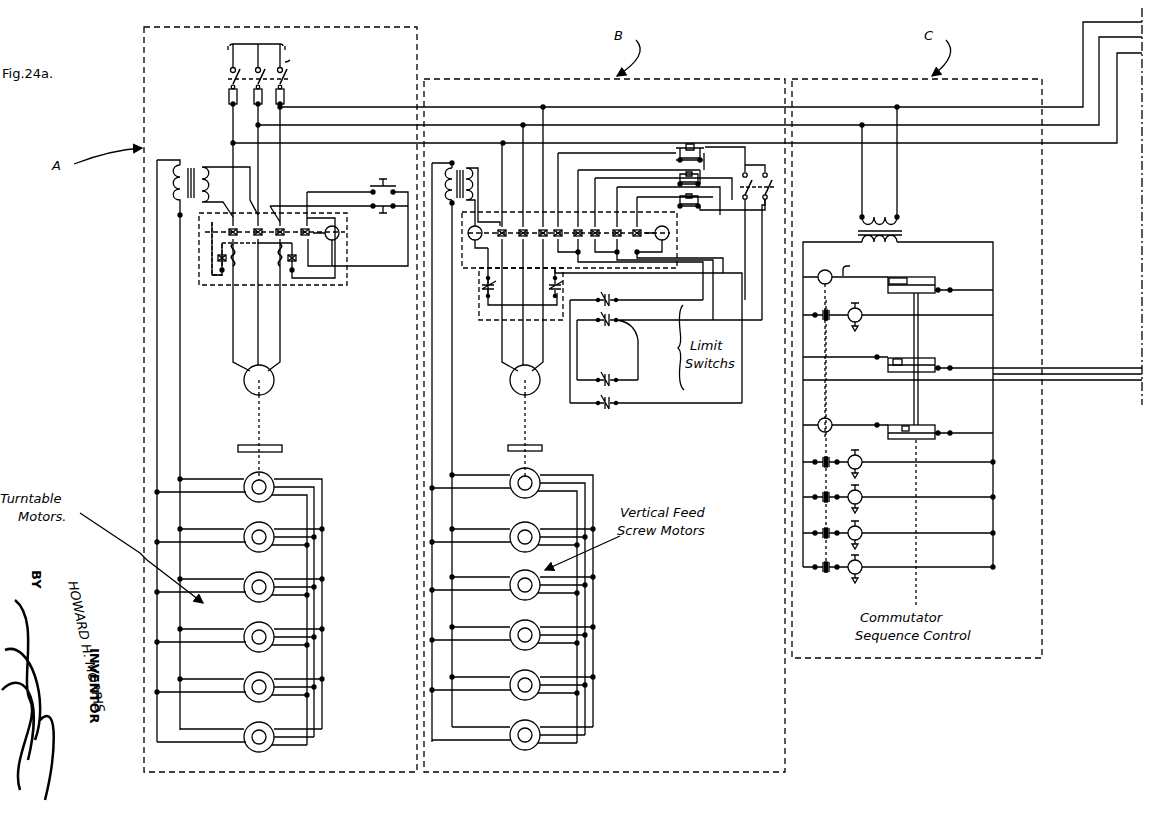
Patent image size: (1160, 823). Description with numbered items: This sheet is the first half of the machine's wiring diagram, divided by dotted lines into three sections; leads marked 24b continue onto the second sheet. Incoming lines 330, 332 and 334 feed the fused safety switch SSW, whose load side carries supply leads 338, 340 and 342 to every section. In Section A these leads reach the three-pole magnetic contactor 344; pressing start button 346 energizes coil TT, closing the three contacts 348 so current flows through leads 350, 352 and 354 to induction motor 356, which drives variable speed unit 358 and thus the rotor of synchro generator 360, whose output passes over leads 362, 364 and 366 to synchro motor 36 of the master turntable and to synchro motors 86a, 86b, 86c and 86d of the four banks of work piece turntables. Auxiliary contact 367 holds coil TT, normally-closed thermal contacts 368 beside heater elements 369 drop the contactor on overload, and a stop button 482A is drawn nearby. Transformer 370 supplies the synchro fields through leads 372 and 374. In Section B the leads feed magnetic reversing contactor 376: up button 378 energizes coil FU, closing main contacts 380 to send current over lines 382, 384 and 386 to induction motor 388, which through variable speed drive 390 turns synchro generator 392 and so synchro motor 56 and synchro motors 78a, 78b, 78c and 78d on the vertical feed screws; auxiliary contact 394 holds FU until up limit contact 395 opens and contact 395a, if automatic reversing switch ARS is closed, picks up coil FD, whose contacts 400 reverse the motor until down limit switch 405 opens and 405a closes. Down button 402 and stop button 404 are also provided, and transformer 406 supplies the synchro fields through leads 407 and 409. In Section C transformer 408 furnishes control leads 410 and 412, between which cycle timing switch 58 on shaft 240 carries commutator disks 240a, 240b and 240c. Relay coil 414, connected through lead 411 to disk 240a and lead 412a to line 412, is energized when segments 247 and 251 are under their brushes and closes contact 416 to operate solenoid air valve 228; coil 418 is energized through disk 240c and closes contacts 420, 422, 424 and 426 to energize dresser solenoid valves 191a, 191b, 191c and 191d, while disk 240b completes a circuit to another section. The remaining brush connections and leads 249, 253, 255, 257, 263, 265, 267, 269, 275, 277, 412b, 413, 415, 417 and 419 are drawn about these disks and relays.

The incoming line 330 is at (230, 66).
The incoming line 332 is at (283, 46).
The incoming line 334 is at (285, 64).
The fused safety switch SSW is at (288, 81).
The supply lead 338 is at (425, 108).
The supply lead 340 is at (377, 124).
The supply lead 342 is at (361, 106).
The second sheet of wiring diagram 24b is at (1152, 15).
The transformer 370 is at (208, 150).
The lead 372 is at (157, 390).
The lead 374 is at (180, 416).
The three-pole magnetic contactor 344 is at (348, 282).
The contactor coil TT is at (327, 245).
The normally-closed thermally-operated contacts 368 is at (212, 258).
The heater elements 369 is at (221, 268).
The main contacts 348 is at (262, 250).
The start button 346 is at (372, 186).
The auxiliary contact 367 is at (305, 202).
The stop push button 482A is at (384, 230).
The motor lead 350 is at (233, 328).
The motor lead 352 is at (257, 341).
The motor lead 354 is at (281, 350).
The induction motor 356 is at (275, 384).
The variable speed unit 358 is at (279, 444).
The synchro generator 360 is at (251, 476).
The lead 362 is at (309, 478).
The lead 364 is at (323, 503).
The lead 366 is at (308, 556).
The synchro motor 36 is at (251, 527).
The synchro motor 86a is at (251, 577).
The synchro motor 86b is at (251, 627).
The synchro motor 86c is at (251, 677).
The synchro motor 86d is at (251, 727).
The transformer 406 is at (475, 153).
The lead 407 is at (452, 423).
The lead 409 is at (432, 447).
The up feed coil FU is at (478, 236).
The down feed coil FD is at (655, 238).
The main contacts 380 is at (500, 224).
The main contacts 400 is at (596, 224).
The up button 378 is at (688, 150).
The down push button 402 is at (700, 170).
The stop push button 404 is at (695, 210).
The automatic reversing switch ARS is at (770, 183).
The magnetic reversing contactor 376 is at (480, 283).
The auxiliary contact 394 is at (561, 287).
The motor line 382 is at (500, 352).
The motor line 384 is at (517, 365).
The motor line 386 is at (540, 372).
The induction motor 388 is at (517, 386).
The variable speed drive 390 is at (543, 448).
The up limit switch contact 395 is at (620, 296).
The up limit switch contact 395a is at (618, 317).
The down limit switch 405 is at (620, 370).
The down limit switch contact 405a is at (622, 413).
The synchro generator 392 is at (518, 474).
The synchro motor 56 is at (517, 528).
The synchro motor 78a is at (519, 576).
The synchro motor 78b is at (519, 625).
The synchro motor 78c is at (519, 675).
The synchro motor 78d is at (519, 725).
The transformer 408 is at (900, 228).
The control power lead 410 is at (830, 236).
The control power lead 412 is at (940, 264).
The lead 412a is at (993, 290).
The conductor 412b is at (993, 433).
The conductor 413 is at (1083, 362).
The cycle timing switch 58 is at (943, 245).
The relay coil 414 is at (845, 345).
The lead 411 is at (847, 262).
The brush 249 is at (887, 276).
The commutator disk 240a is at (940, 270).
The contact segment 247 is at (898, 278).
The brush 253 is at (948, 290).
The contact segment 251 is at (935, 295).
The magnetic contactor 416 is at (830, 312).
The signal lamp 417 is at (920, 315).
The solenoid air valve 228 is at (840, 334).
The shaft 240 is at (918, 358).
The brush 257 is at (877, 357).
The commutator disk 240b is at (945, 358).
The contact 255 is at (897, 358).
The brush 265 is at (948, 370).
The contact 263 is at (905, 373).
The relay coil 418 is at (845, 415).
The conductor 415 is at (862, 426).
The brush 269 is at (880, 420).
The commutator disk 240c is at (937, 420).
The contact 267 is at (905, 424).
The brush 277 is at (948, 432).
The brush 275 is at (932, 445).
The contact 420 is at (830, 457).
The solenoid valve 191a is at (862, 462).
The conductor 419 is at (893, 462).
The contact 422 is at (838, 487).
The solenoid valve 191b is at (863, 497).
The contact 424 is at (838, 523).
The solenoid valve 191c is at (863, 533).
The contact 426 is at (838, 557).
The solenoid valve 191d is at (863, 567).